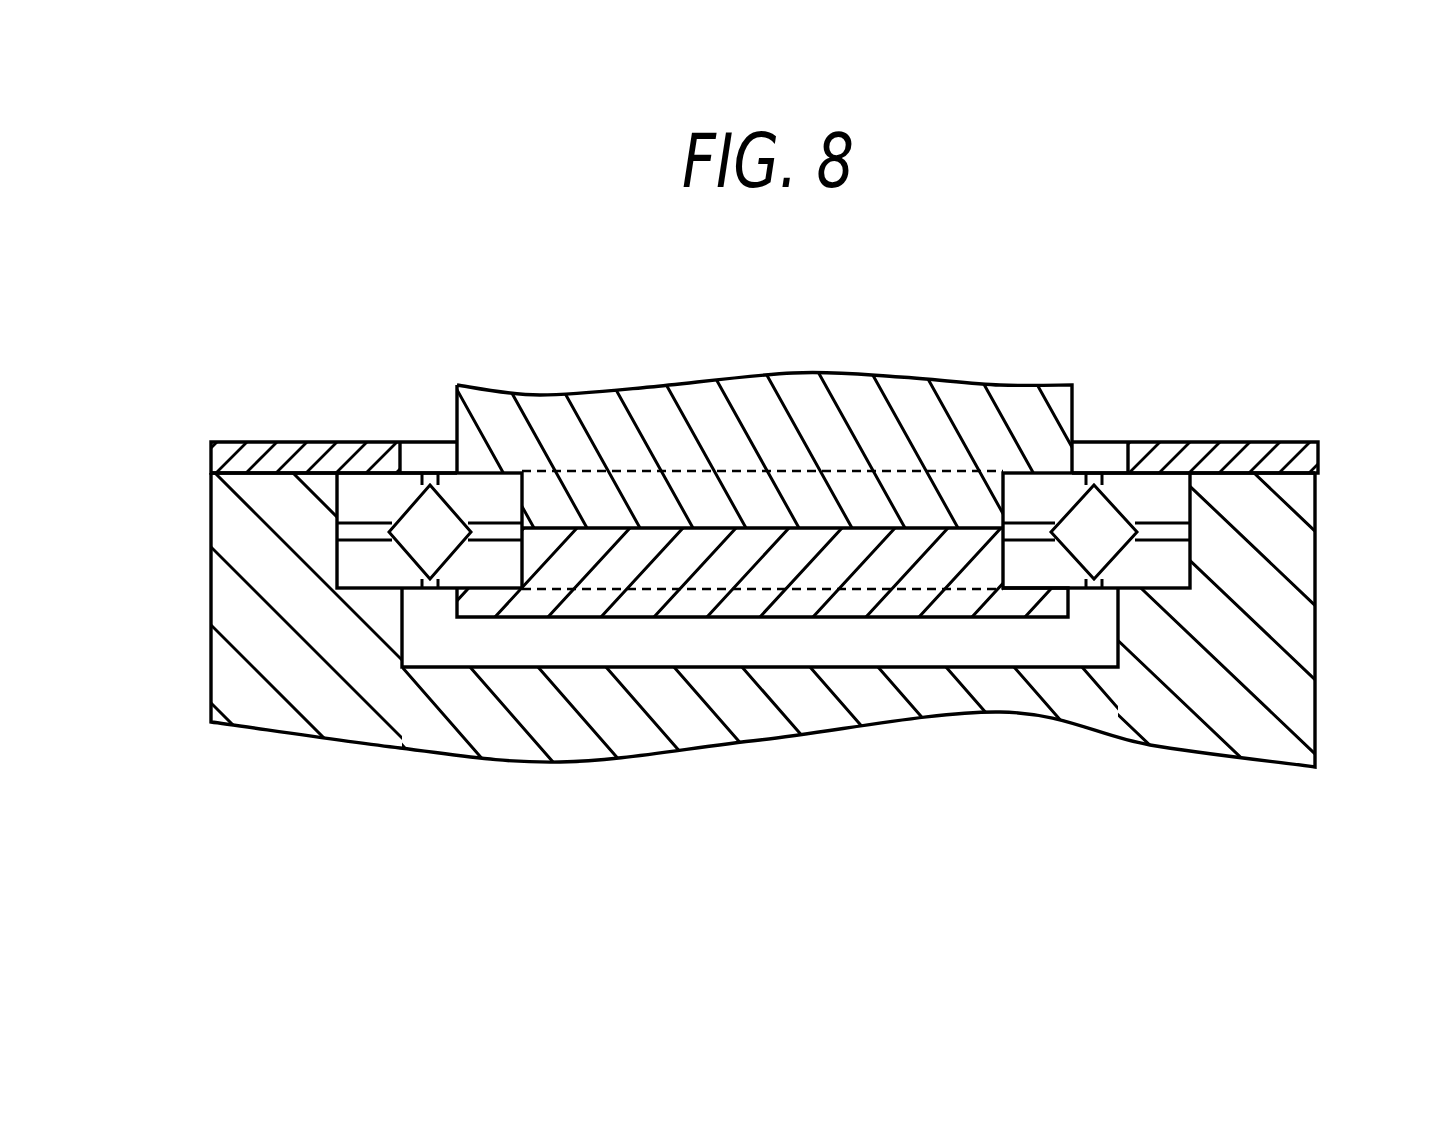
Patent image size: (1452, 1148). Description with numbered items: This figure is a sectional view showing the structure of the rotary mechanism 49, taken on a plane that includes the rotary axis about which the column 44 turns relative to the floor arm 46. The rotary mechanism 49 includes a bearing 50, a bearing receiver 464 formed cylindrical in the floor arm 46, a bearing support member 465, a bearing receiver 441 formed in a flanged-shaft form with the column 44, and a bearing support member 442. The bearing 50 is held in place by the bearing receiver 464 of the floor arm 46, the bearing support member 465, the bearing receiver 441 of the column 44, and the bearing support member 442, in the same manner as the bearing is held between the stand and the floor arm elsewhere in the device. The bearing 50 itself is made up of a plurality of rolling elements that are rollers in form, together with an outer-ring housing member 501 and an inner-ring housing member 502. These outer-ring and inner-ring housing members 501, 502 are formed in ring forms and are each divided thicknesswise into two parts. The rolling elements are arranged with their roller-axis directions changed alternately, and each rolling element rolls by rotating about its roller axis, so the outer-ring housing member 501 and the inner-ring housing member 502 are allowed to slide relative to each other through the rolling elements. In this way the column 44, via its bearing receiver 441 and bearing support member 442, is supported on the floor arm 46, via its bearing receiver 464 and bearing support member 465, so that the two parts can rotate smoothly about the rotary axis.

The column 44 is at (1075, 402).
The bearing receiver 441 is at (758, 390).
The bearing support member 442 is at (758, 597).
The floor arm 46 is at (1317, 752).
The bearing receiver 464 is at (1295, 640).
The bearing support member 465 is at (1318, 452).
The rotary mechanism 49 is at (1248, 405).
The bearing 50 is at (335, 562).
The outer-ring housing member 501 is at (1170, 592).
The inner-ring housing member 502 is at (473, 593).